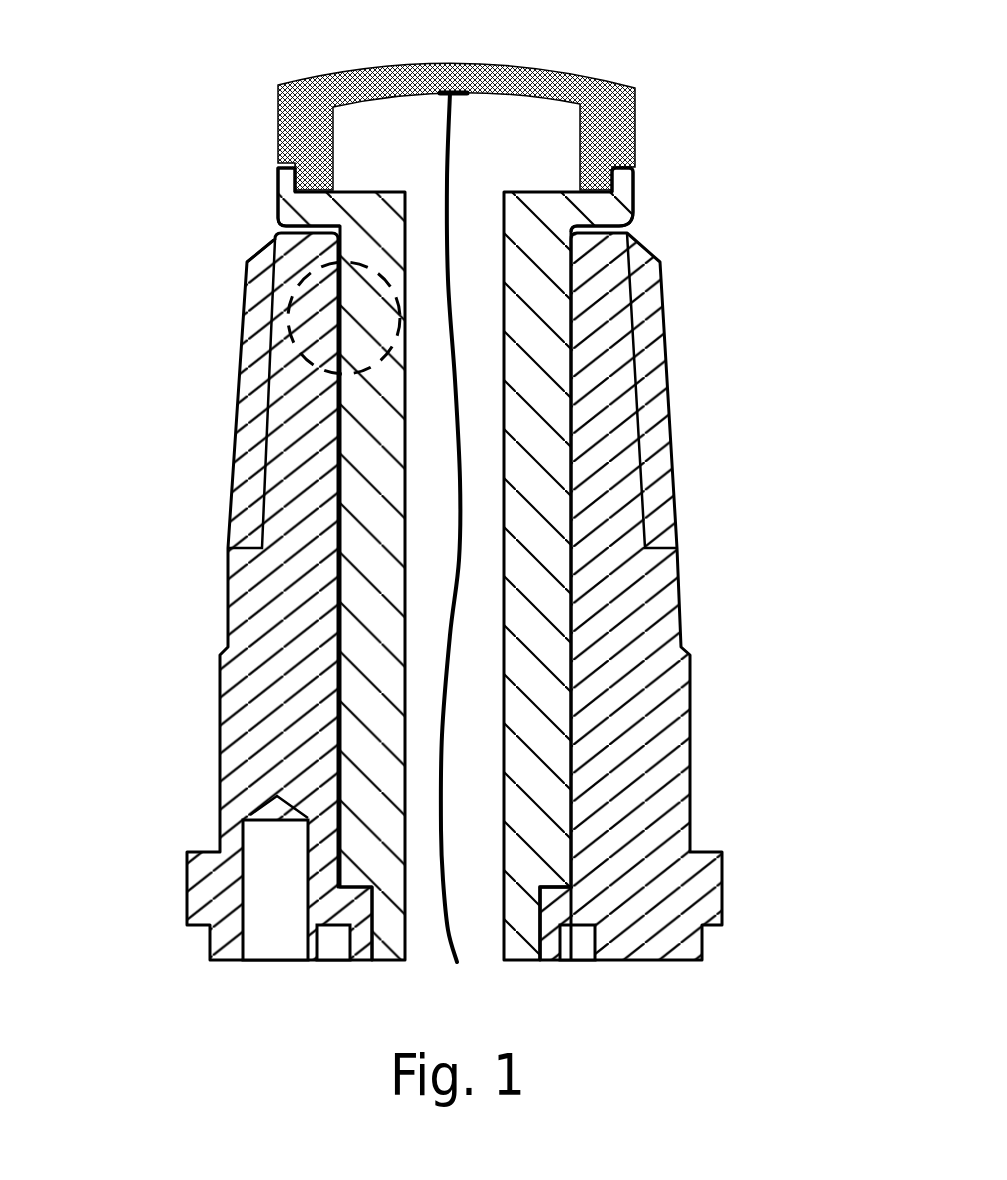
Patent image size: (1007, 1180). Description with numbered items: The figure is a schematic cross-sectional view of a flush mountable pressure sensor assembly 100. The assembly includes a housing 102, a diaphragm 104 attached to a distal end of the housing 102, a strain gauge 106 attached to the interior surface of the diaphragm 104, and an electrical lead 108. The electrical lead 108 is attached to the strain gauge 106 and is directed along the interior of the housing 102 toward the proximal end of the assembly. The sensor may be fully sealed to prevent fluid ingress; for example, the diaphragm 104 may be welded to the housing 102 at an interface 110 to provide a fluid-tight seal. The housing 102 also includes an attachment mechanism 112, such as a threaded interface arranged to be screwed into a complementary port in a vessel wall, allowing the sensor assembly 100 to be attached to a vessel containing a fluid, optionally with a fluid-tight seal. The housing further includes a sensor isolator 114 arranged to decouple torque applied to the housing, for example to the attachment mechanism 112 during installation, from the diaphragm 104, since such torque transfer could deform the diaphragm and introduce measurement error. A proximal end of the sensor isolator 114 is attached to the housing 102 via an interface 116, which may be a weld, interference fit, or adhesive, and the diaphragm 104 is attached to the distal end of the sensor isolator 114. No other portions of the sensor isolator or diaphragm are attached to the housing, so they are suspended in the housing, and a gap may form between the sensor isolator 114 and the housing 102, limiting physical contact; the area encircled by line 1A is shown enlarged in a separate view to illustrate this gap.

The flush mountable pressure sensor assembly 100 is at (190, 348).
The housing 102 is at (697, 700).
The diaphragm 104 is at (545, 92).
The strain gauge 106 is at (452, 92).
The electrical lead 108 is at (448, 185).
The interface 110 is at (288, 165).
The attachment mechanism 112 is at (257, 368).
The sensor isolator 114 is at (540, 237).
The interface 116 is at (540, 908).
The line encircling enlarged-view area 1A is at (310, 272).